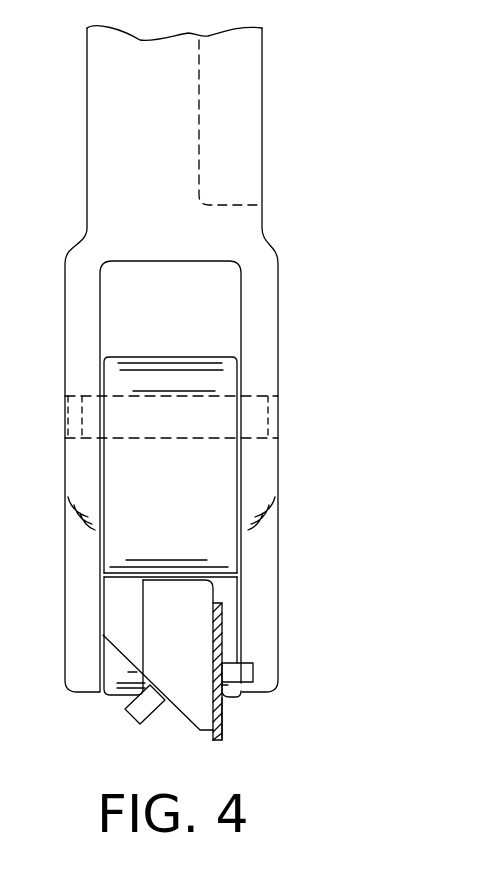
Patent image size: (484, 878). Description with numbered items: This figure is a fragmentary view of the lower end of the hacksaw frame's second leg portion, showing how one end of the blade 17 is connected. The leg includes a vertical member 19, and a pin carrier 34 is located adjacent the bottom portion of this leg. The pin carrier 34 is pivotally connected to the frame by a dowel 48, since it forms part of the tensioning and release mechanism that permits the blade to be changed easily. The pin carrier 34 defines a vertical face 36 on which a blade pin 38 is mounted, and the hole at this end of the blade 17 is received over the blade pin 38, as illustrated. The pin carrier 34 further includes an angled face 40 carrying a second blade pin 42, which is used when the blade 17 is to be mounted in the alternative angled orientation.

The vertical member 19 is at (87, 122).
The dowel 48 is at (257, 400).
The pin carrier 34 is at (128, 518).
The vertical face 36 is at (214, 592).
The blade pin 38 is at (253, 663).
The blade 17 is at (223, 717).
The angled face 40 is at (197, 727).
The blade pin 42 is at (127, 705).